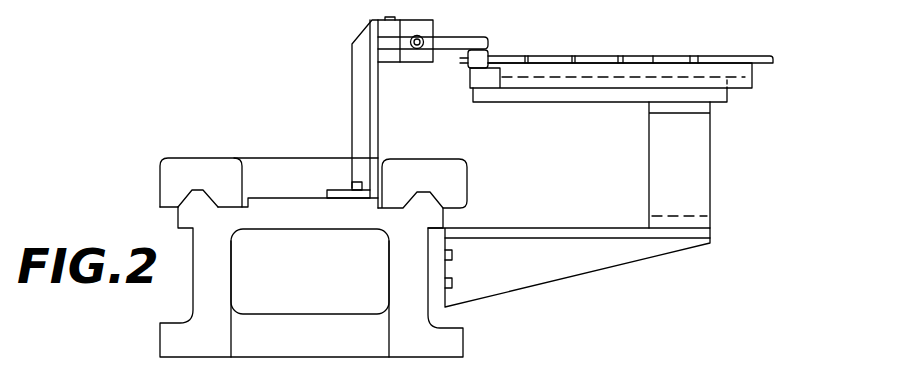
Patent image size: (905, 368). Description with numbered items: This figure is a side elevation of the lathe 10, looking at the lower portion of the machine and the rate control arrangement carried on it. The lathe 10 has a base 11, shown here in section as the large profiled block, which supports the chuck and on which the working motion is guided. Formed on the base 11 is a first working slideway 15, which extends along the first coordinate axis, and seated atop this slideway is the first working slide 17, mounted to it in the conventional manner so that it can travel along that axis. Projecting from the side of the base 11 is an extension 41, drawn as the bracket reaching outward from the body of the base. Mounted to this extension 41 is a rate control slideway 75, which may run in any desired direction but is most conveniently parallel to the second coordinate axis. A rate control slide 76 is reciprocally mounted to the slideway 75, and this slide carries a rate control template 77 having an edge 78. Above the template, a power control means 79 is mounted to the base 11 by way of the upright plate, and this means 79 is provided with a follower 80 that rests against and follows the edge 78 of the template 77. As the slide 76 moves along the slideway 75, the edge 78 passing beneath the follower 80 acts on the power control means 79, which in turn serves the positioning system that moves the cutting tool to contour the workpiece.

The lathe 10 is at (95, 182).
The base 11 is at (193, 292).
The first working slideway 15 is at (208, 192).
The first working slide 17 is at (185, 158).
The extension 41 is at (585, 263).
The rate control slideway 75 is at (600, 102).
The rate control slide 76 is at (752, 85).
The rate control template 77 is at (777, 67).
The edge 78 is at (560, 58).
The power control means 79 is at (410, 62).
The follower 80 is at (465, 64).